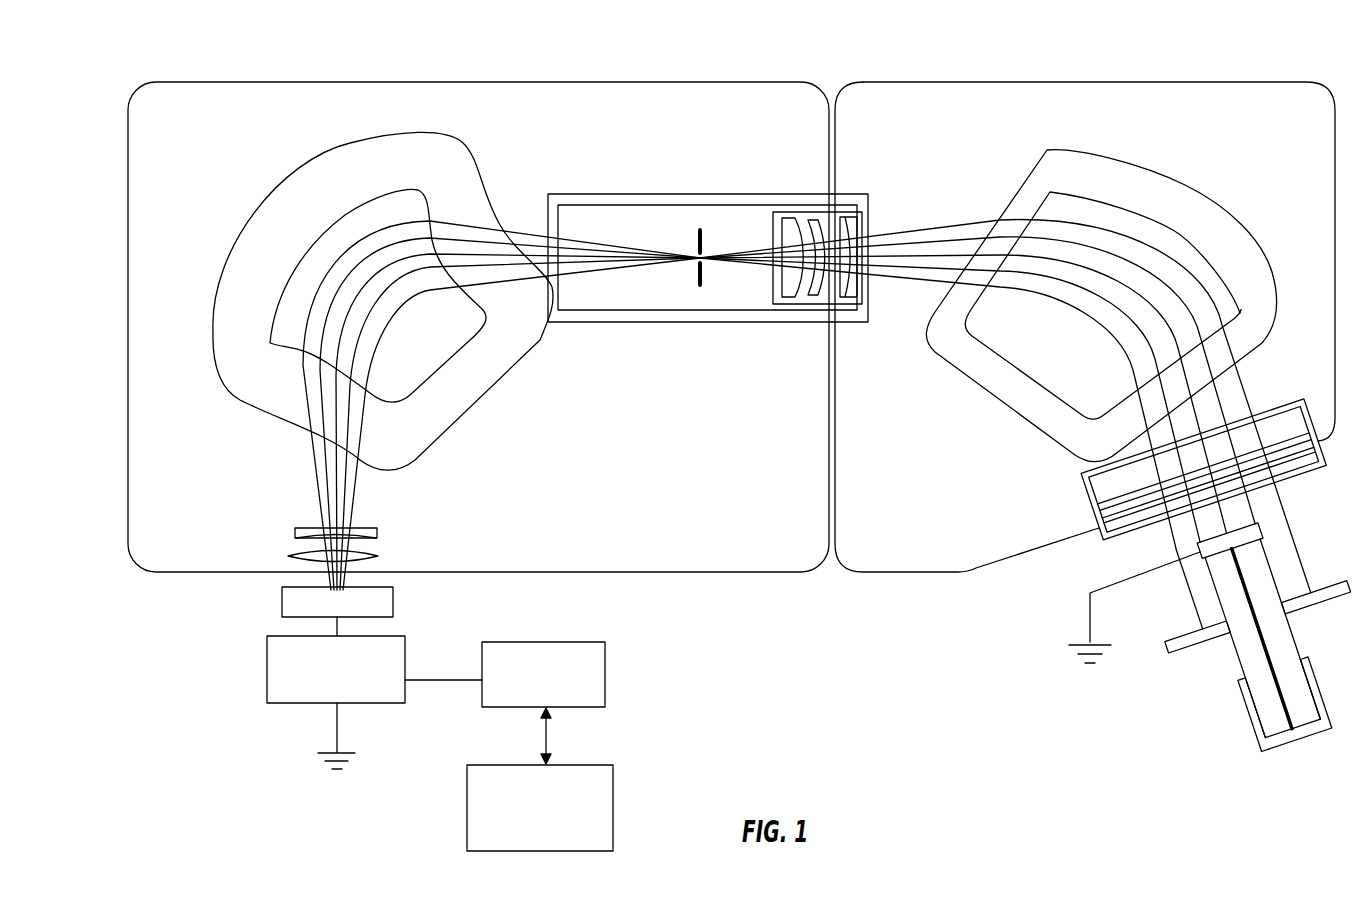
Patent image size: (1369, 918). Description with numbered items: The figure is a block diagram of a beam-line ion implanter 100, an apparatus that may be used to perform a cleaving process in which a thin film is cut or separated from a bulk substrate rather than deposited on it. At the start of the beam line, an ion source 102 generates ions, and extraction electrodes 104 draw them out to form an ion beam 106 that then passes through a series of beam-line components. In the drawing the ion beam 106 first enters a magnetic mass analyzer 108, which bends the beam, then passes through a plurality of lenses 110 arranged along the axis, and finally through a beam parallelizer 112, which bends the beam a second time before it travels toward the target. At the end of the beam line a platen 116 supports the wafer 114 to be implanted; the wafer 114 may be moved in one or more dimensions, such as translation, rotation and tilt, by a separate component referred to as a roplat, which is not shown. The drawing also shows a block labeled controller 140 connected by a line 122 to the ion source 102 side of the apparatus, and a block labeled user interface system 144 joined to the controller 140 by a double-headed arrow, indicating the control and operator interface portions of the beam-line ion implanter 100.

The beam-line ion implanter 100 is at (752, 52).
The ion source 102 is at (393, 598).
The extraction electrodes 104 is at (381, 552).
The ion beam 106 is at (318, 468).
The magnetic mass analyzer 108 is at (267, 200).
The plurality of lenses 110 is at (795, 212).
The beam parallelizer 112 is at (1167, 178).
The wafer 114 is at (1197, 541).
The platen 116 is at (1263, 543).
The control line 122 is at (440, 680).
The controller 140 is at (605, 675).
The user interface system 144 is at (613, 808).